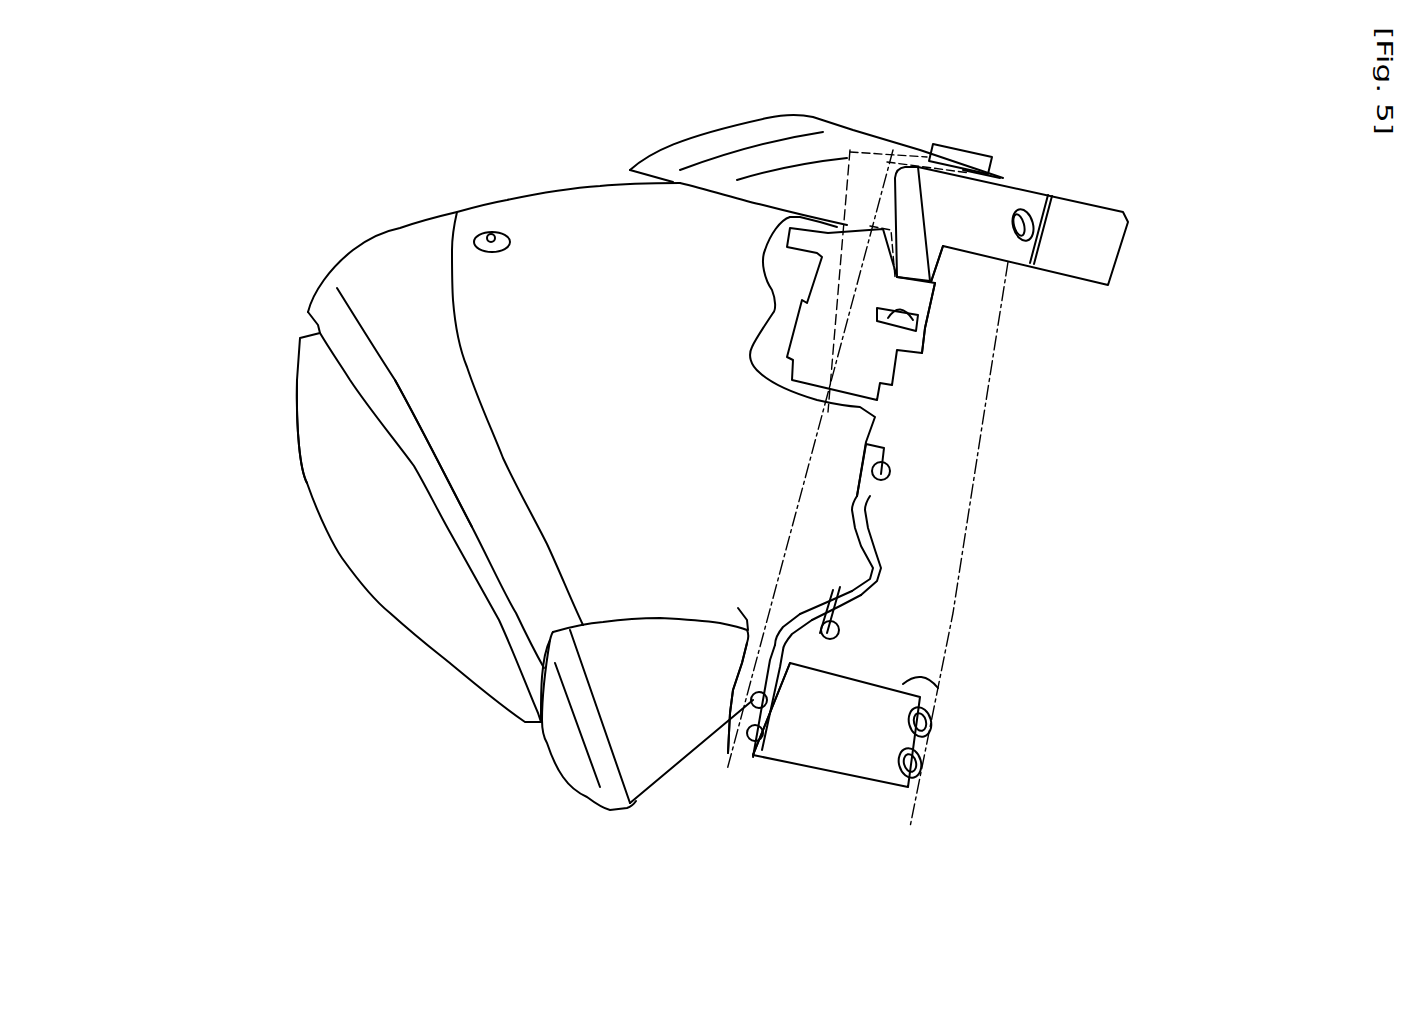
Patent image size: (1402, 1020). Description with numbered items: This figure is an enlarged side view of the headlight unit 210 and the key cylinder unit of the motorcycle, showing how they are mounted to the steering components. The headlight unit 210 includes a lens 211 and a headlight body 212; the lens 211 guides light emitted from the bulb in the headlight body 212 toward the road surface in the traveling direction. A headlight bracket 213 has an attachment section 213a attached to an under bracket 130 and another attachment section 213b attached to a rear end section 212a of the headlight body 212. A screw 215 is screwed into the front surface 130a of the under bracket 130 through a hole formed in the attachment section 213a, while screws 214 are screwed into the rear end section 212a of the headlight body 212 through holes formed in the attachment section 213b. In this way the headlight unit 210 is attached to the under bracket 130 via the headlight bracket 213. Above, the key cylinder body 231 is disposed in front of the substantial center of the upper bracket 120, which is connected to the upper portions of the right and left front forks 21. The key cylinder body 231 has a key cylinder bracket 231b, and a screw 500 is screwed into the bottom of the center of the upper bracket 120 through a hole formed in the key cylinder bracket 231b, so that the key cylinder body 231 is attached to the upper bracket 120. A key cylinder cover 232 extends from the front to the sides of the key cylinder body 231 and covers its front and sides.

The headlight unit 210 is at (663, 773).
The lens 211 is at (322, 477).
The headlight body 212 is at (535, 483).
The rear end section 212a is at (857, 521).
The headlight bracket 213 is at (800, 657).
The attachment section 213a is at (750, 752).
The attachment section 213b is at (873, 582).
The screws 214 is at (886, 467).
The screw 215 is at (728, 722).
The front forks 21 is at (968, 547).
The upper bracket 120 is at (1008, 195).
The under bracket 130 is at (925, 683).
The front surface 130a is at (757, 747).
The key cylinder body 231 is at (930, 347).
The key cylinder bracket 231b is at (933, 303).
The key cylinder cover 232 is at (698, 145).
The screw 500 is at (918, 327).